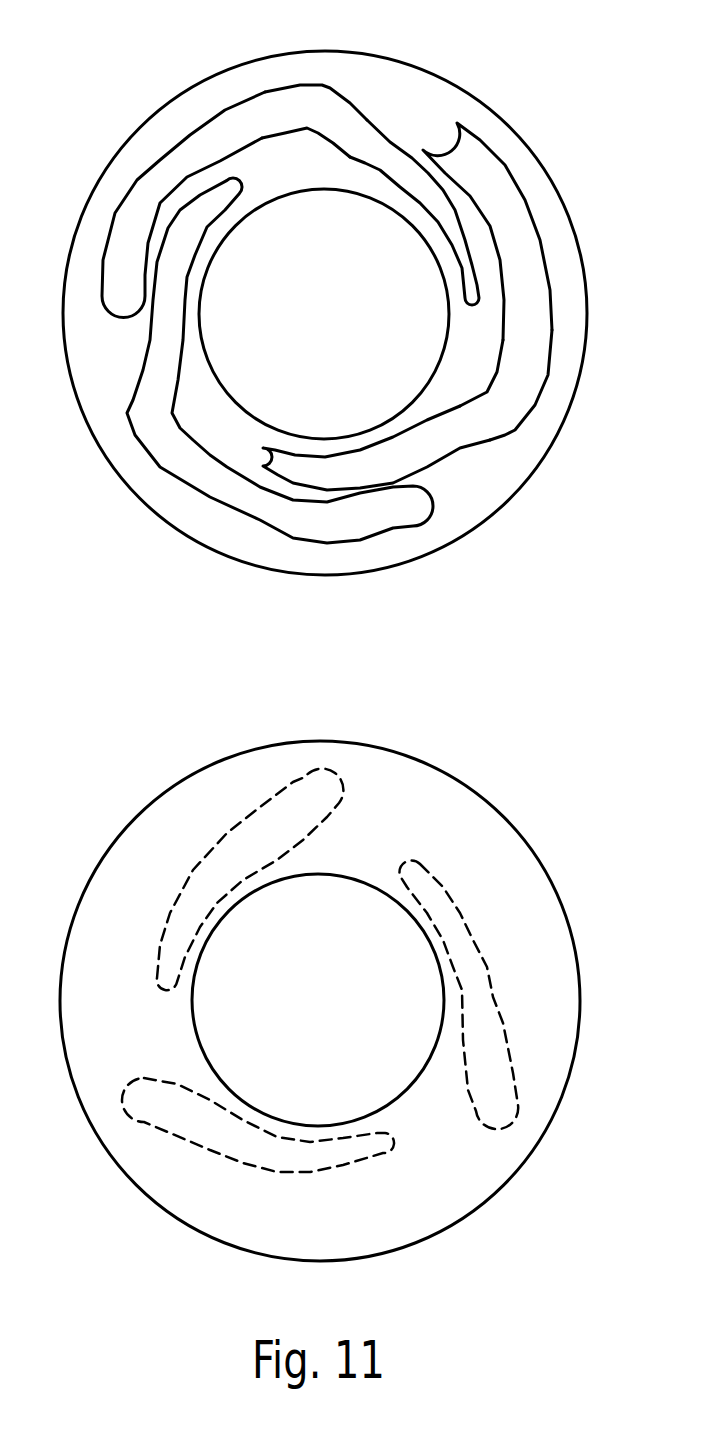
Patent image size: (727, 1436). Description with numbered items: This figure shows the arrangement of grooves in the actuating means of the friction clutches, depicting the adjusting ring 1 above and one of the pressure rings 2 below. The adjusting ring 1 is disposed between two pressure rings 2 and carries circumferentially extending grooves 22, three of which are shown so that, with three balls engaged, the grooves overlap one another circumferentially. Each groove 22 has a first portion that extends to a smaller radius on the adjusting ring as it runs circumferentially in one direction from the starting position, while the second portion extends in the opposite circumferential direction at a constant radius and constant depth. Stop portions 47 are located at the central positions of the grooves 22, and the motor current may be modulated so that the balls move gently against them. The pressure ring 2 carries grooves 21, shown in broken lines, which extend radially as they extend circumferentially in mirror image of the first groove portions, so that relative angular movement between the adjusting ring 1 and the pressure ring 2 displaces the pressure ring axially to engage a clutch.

The adjusting ring 1 is at (535, 197).
The pressure ring 2 is at (465, 810).
The grooves in the pressure rings 21 is at (260, 827).
The grooves in the adjusting ring 22 is at (197, 147).
The stop portions 47 is at (347, 103).